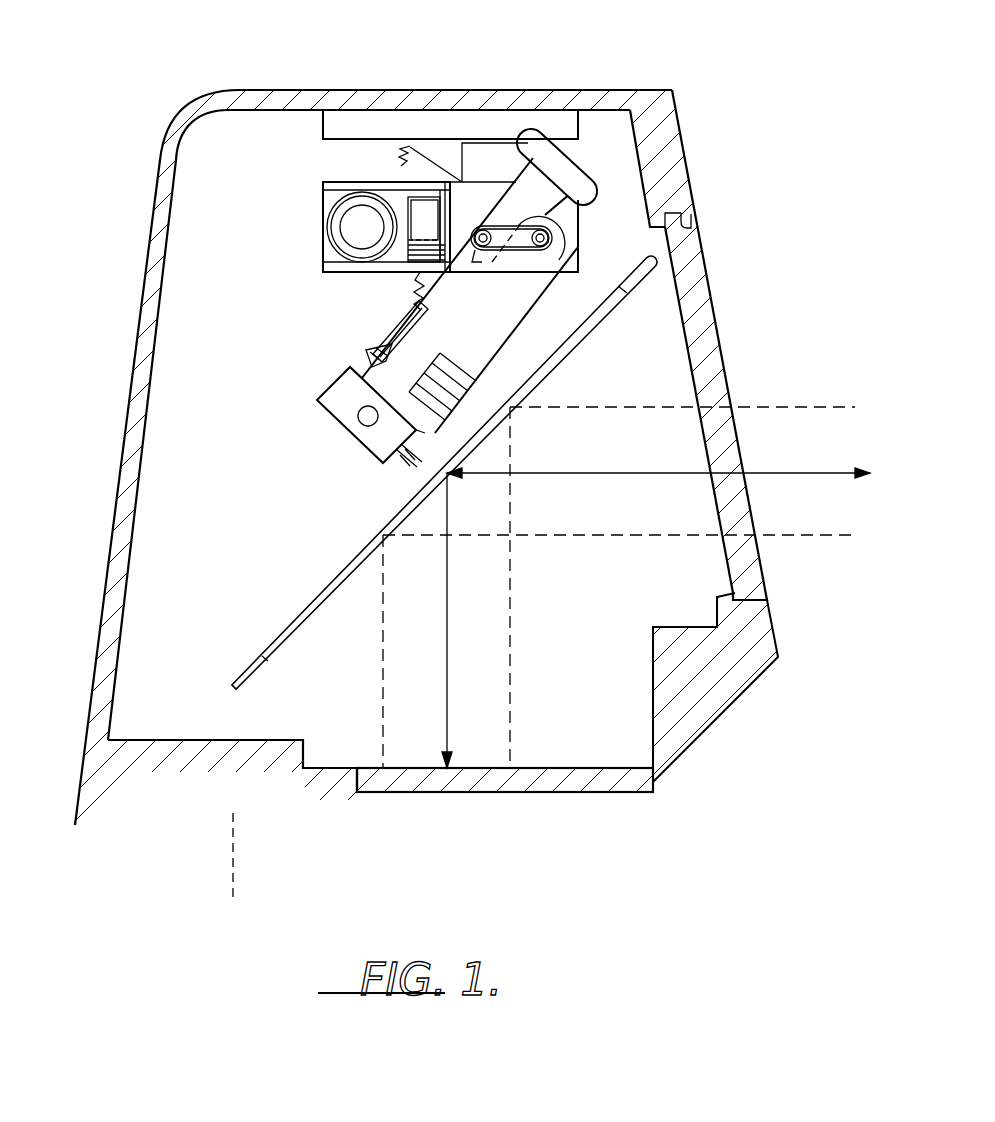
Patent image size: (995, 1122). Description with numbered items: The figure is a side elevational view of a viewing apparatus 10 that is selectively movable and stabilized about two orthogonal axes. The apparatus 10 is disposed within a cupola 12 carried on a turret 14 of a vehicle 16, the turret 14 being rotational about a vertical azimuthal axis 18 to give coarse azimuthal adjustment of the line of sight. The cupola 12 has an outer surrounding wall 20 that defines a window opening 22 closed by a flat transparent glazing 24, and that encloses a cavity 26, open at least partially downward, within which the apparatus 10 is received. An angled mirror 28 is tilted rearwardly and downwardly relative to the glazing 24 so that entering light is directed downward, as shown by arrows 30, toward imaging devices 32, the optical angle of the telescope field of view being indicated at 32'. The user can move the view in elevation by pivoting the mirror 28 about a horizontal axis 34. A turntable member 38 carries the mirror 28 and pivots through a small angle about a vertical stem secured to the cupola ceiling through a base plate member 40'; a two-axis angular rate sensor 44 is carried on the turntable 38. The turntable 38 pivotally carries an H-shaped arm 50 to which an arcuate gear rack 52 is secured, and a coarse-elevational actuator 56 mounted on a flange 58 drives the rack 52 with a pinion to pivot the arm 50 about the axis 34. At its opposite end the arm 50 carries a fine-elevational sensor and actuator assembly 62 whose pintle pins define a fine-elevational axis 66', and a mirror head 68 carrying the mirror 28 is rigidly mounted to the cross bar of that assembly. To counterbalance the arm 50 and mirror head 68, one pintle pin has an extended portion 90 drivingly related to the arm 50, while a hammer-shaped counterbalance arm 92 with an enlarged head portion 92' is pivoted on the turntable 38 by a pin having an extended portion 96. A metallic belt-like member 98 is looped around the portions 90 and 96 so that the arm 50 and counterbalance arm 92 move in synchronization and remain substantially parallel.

The viewing apparatus 10 is at (200, 384).
The cupola 12 is at (158, 176).
The turret 14 is at (757, 662).
The vehicle 16 is at (757, 807).
The vertical azimuthal axis 18 is at (235, 858).
The outer surrounding wall 20 is at (672, 165).
The window opening 22 is at (680, 228).
The glazing 24 is at (733, 447).
The cavity 26 is at (232, 243).
The mirror 28 is at (580, 335).
The arrows 30 is at (555, 476).
The imaging devices 32 is at (619, 587).
The field of view 32' is at (537, 690).
The horizontal axis 34 is at (547, 240).
The turntable member 38 is at (486, 192).
The base plate member 40' is at (478, 98).
The two-axis angular rate sensor 44 is at (414, 270).
The H-shaped arm 50 is at (487, 310).
The arcuate gear rack 52 is at (400, 163).
The coarse-elevational actuator 56 is at (348, 232).
The flange 58 is at (323, 200).
The fine-elevational sensor and actuator assembly 62 is at (323, 429).
The fine-elevational axis 66' is at (366, 388).
The mirror head 68 is at (335, 545).
The extended portion of pintle pin 90 is at (553, 245).
The counterbalance arm 92 is at (571, 194).
The enlarged head portion 92' is at (598, 145).
The extended portion of pin 96 is at (474, 264).
The belt-like member 98 is at (490, 258).